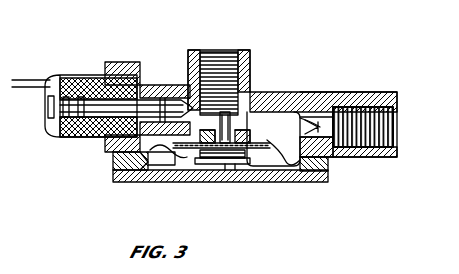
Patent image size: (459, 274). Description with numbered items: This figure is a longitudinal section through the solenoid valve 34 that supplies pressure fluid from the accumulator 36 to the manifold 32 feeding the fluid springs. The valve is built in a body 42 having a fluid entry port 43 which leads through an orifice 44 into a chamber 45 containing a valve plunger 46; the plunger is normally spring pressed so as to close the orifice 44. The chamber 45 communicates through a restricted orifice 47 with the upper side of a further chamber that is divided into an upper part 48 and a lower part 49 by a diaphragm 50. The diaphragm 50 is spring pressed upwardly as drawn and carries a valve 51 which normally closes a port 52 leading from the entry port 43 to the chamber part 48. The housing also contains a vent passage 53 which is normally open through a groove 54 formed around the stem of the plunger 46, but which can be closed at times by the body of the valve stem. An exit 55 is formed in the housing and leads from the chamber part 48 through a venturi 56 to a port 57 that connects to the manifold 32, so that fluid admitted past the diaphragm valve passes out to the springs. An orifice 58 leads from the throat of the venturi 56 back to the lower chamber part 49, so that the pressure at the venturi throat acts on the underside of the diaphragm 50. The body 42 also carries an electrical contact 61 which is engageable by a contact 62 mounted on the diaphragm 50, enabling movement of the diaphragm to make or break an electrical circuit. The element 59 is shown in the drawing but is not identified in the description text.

The manifold 32 is at (398, 135).
The solenoid valve 34 is at (105, 184).
The accumulator 36 is at (225, 36).
The body 42 is at (328, 176).
The fluid entry port 43 is at (235, 59).
The orifice 44 is at (170, 97).
The chamber 45 is at (168, 95).
The valve plunger 46 is at (82, 140).
The restricted orifice 47 is at (183, 146).
The upper chamber part 48 is at (128, 176).
The lower chamber part 49 is at (155, 163).
The diaphragm 50 is at (284, 170).
The valve 51 is at (199, 172).
The port 52 is at (248, 92).
The vent passage 53 is at (158, 92).
The groove 54 is at (143, 100).
The exit 55 is at (312, 113).
The venturi 56 is at (315, 115).
The port 57 is at (388, 118).
The orifice 58 is at (338, 158).
The inlet pipe 59 is at (62, 77).
The electrical contact 61 is at (222, 175).
The contact 62 is at (233, 166).